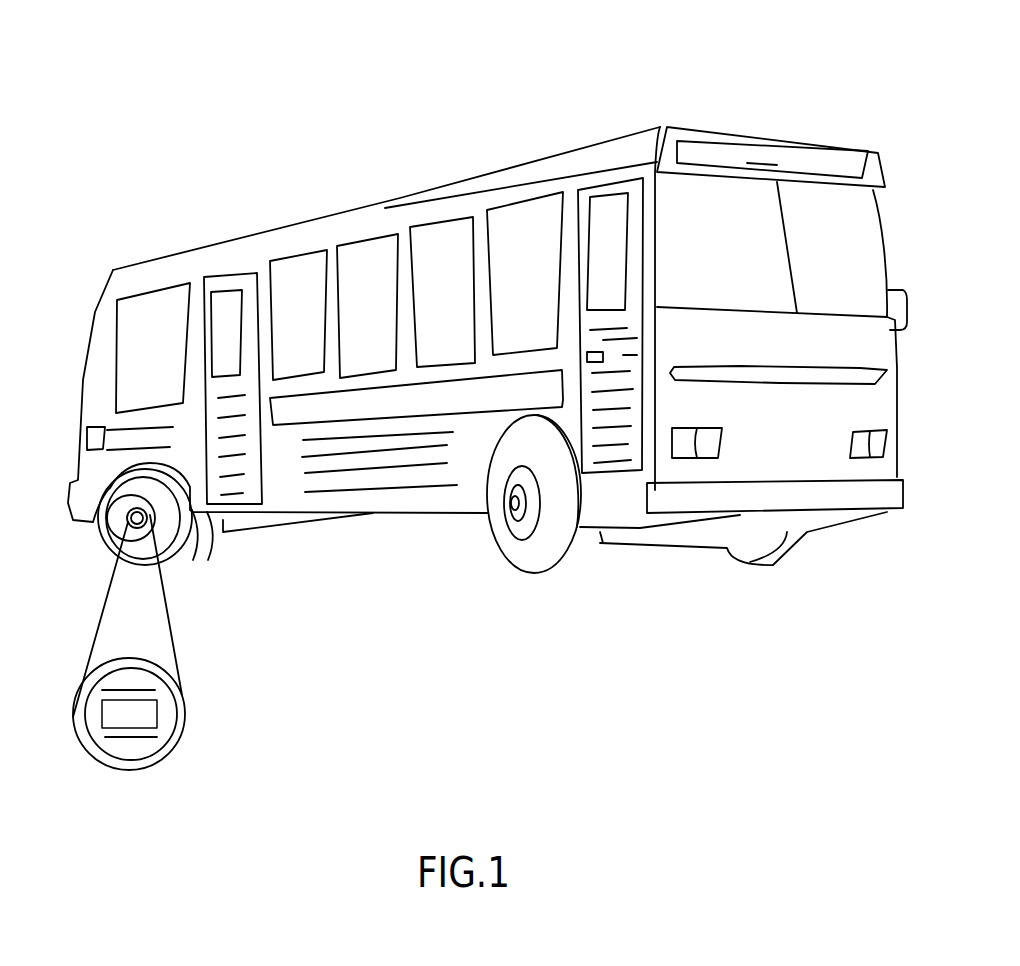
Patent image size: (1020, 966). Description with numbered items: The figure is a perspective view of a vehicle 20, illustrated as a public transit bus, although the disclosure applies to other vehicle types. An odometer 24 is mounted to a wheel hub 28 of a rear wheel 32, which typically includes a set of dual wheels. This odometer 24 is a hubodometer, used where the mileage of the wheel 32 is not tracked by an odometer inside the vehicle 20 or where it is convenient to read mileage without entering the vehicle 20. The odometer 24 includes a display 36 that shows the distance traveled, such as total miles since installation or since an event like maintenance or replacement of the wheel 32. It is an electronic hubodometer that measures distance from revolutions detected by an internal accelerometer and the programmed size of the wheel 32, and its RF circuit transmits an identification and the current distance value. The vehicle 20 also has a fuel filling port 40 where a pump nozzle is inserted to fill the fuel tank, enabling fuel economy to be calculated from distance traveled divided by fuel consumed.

The vehicle 20 is at (468, 321).
The odometer 24 is at (155, 674).
The wheel hub 28 is at (128, 518).
The rear wheel 32 is at (162, 542).
The display 36 is at (108, 728).
The fuel filling port 40 is at (90, 435).